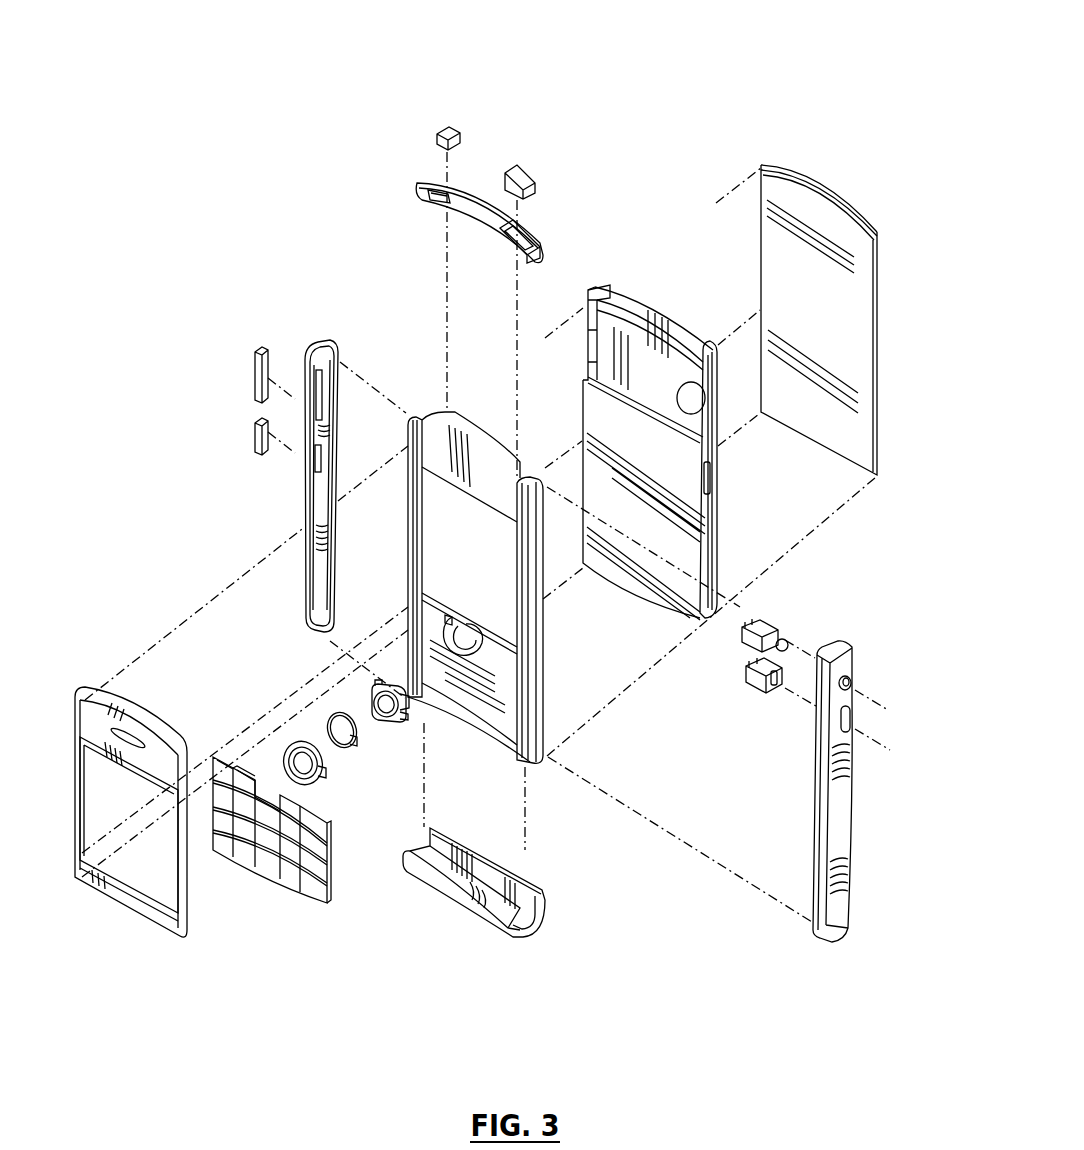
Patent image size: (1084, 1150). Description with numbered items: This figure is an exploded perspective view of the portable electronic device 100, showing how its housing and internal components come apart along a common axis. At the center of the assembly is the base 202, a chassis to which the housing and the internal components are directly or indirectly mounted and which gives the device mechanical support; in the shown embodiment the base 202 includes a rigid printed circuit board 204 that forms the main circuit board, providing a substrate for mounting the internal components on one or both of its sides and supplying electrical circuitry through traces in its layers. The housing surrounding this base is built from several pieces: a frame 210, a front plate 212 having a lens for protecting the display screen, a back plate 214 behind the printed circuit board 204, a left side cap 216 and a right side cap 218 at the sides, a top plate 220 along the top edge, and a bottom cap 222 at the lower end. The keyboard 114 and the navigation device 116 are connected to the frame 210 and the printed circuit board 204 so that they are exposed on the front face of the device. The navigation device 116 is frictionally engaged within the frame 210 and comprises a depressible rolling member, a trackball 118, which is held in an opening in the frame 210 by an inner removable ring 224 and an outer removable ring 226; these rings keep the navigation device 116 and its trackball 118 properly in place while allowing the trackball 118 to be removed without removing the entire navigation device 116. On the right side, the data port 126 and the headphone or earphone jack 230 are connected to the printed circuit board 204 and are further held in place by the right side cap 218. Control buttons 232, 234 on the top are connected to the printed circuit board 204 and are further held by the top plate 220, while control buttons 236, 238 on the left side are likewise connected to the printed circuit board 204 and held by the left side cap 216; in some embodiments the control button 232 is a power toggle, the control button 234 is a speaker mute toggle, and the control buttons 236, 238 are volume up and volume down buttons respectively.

The portable electronic device 100 is at (797, 78).
The keyboard 114 is at (272, 907).
The navigation device 116 is at (410, 712).
The trackball 118 is at (382, 724).
The data port 126 is at (752, 688).
The base 202 is at (656, 292).
The printed circuit board 204 is at (706, 500).
The frame 210 is at (486, 418).
The front plate 212 is at (140, 716).
The back plate 214 is at (818, 178).
The left side cap 216 is at (318, 340).
The right side cap 218 is at (818, 848).
The top plate 220 is at (418, 190).
The bottom cap 222 is at (440, 897).
The inner removable ring 224 is at (358, 742).
The outer removable ring 226 is at (322, 775).
The headphone or earphone jack 230 is at (748, 645).
The control button 232 is at (443, 128).
The control button 234 is at (524, 167).
The control button 236 is at (257, 350).
The control button 238 is at (257, 421).